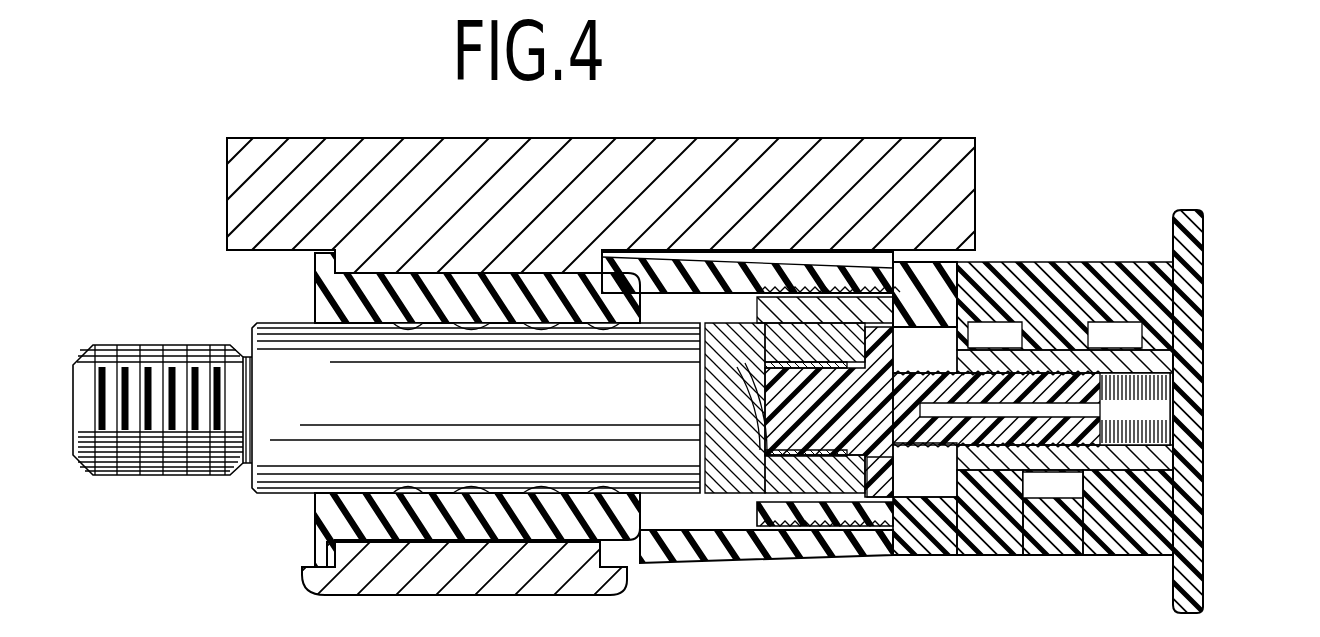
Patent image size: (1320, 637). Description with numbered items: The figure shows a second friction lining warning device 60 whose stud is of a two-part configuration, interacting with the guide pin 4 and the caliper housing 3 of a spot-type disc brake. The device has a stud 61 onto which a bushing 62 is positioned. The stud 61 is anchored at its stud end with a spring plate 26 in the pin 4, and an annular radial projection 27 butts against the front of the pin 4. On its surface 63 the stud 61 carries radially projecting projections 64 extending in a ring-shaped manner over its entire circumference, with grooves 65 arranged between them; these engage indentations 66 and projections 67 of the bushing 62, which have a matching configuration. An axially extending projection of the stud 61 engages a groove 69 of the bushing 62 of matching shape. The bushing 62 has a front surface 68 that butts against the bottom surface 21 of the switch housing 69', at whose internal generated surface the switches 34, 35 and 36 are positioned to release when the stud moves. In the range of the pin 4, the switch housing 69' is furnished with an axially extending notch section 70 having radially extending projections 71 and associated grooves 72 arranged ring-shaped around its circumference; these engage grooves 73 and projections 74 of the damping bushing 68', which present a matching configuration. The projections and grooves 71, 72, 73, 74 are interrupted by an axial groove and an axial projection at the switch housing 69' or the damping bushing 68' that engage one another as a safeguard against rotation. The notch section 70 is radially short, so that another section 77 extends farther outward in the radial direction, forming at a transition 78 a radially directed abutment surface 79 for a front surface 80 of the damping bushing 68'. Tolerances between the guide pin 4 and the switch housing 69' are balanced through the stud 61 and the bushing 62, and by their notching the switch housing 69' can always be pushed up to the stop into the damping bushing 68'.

The caliper housing 3 is at (388, 575).
The pin 4 is at (292, 460).
The bottom surface 21 is at (1175, 420).
The spring plate 26 is at (742, 470).
The projection 27 is at (855, 528).
The switch 34 is at (1118, 335).
The switch 35 is at (1060, 492).
The switch 36 is at (1008, 335).
The friction lining warning device 60 is at (1245, 310).
The stud 61 is at (940, 345).
The bushing 62 is at (1042, 352).
The surface 63 is at (912, 320).
The projections 64 is at (966, 522).
The grooves 65 is at (985, 548).
The indentations 66 is at (1020, 502).
The projections 67 is at (1055, 522).
The front surface 68 is at (1174, 409).
The damping bushing 68' is at (440, 394).
The groove 69 is at (1105, 460).
The switch housing 69' is at (1076, 530).
The notch section 70 is at (758, 528).
The projections 71 is at (796, 522).
The grooves 72 is at (830, 548).
The grooves 73 is at (800, 272).
The projections 74 is at (835, 300).
The section 77 is at (1105, 542).
The transition 78 is at (900, 535).
The abutment surface 79 is at (880, 520).
The front surface 80 is at (876, 545).